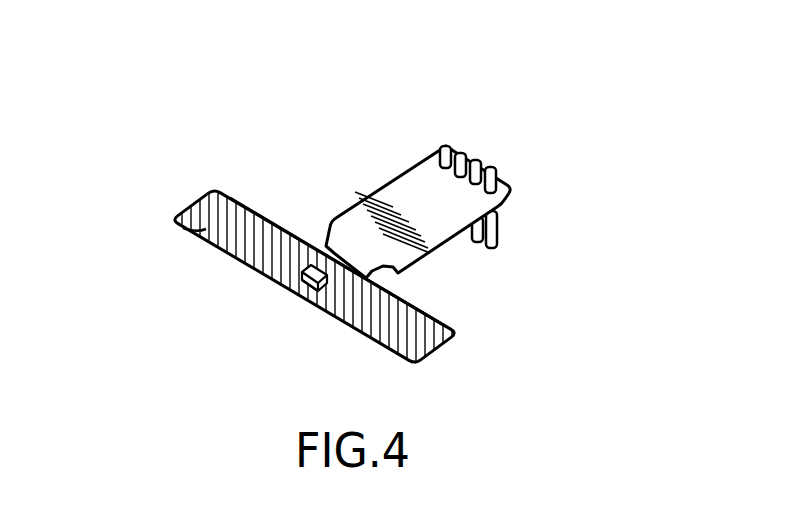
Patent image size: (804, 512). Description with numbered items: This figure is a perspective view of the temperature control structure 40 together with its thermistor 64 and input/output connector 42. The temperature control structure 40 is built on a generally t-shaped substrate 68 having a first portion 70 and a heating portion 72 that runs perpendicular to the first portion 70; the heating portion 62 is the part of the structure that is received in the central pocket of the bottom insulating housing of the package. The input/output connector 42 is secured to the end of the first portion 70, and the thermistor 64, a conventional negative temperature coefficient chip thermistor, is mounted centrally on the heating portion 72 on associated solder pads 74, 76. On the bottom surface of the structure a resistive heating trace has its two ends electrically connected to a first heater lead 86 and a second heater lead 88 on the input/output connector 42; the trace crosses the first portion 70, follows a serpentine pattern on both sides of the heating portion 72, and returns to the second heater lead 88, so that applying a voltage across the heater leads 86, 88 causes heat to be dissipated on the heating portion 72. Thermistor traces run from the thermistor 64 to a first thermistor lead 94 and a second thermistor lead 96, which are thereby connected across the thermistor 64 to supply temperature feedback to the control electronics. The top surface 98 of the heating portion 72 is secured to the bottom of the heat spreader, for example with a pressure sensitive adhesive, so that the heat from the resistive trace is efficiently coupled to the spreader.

The temperature control structure 40 is at (474, 151).
The input/output connector 42 is at (500, 208).
The heating portion 62 is at (458, 333).
The thermistor 64 is at (308, 250).
The t-shaped substrate 68 is at (385, 180).
The first portion 70 is at (436, 150).
The heating portion 72 is at (190, 207).
The solder pad 74 is at (305, 270).
The solder pad 76 is at (309, 292).
The first heater lead 86 is at (500, 182).
The second heater lead 88 is at (446, 147).
The first thermistor lead 94 is at (461, 153).
The second thermistor lead 96 is at (477, 160).
The top surface 98 is at (172, 224).